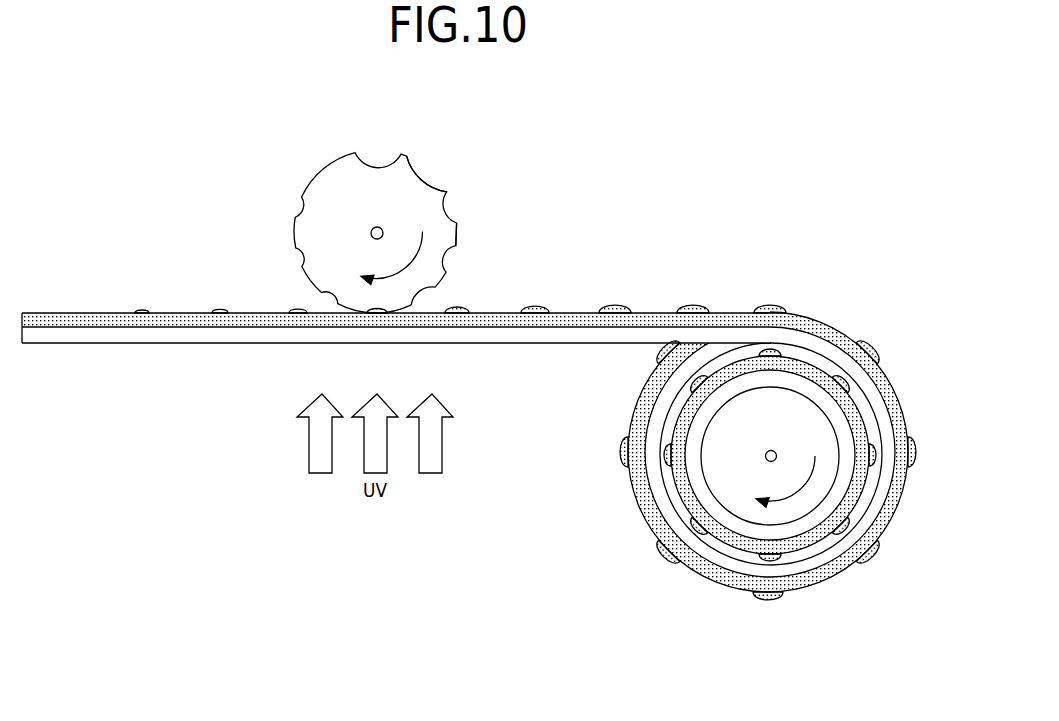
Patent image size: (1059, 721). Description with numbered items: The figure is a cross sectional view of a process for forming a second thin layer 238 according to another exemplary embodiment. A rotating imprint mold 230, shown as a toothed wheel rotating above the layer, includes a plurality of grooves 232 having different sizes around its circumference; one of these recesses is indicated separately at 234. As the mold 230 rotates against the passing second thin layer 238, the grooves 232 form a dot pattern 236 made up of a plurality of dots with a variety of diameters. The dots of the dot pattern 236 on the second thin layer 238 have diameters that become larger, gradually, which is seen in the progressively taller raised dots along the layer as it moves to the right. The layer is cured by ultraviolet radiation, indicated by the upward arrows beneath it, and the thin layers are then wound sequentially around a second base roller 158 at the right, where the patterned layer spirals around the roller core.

The second base roller 158 is at (712, 446).
The rotating imprint mold 230 is at (480, 205).
The grooves 232 is at (422, 170).
The protrusion 234 is at (459, 233).
The dot pattern 236 is at (616, 305).
The second thin layer 238 is at (182, 322).